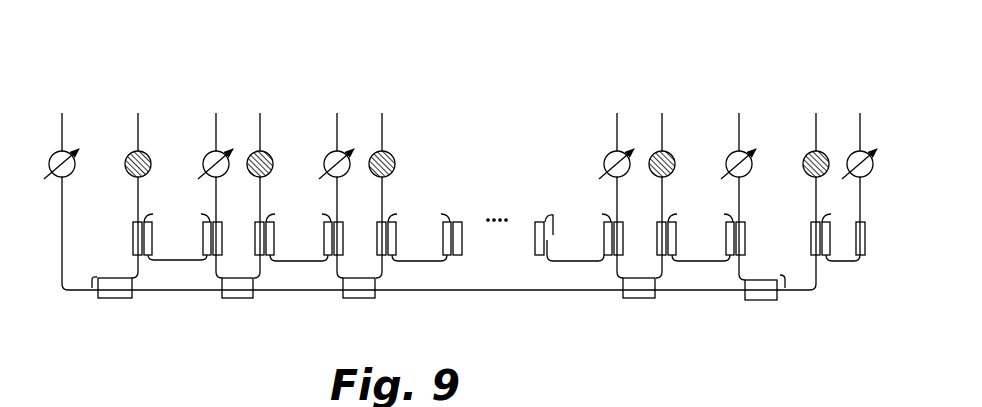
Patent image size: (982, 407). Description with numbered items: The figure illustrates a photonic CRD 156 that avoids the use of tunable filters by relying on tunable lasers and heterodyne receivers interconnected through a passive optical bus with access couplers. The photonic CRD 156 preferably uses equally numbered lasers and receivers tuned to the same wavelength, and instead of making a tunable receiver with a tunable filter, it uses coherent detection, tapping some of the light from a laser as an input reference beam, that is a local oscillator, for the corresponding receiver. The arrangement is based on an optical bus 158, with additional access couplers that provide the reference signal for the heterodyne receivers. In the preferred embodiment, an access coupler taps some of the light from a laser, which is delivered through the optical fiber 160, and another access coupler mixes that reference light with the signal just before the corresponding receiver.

The photonic CRD 156 is at (457, 63).
The optical bus 158 is at (560, 292).
The optical fiber 160 is at (745, 207).